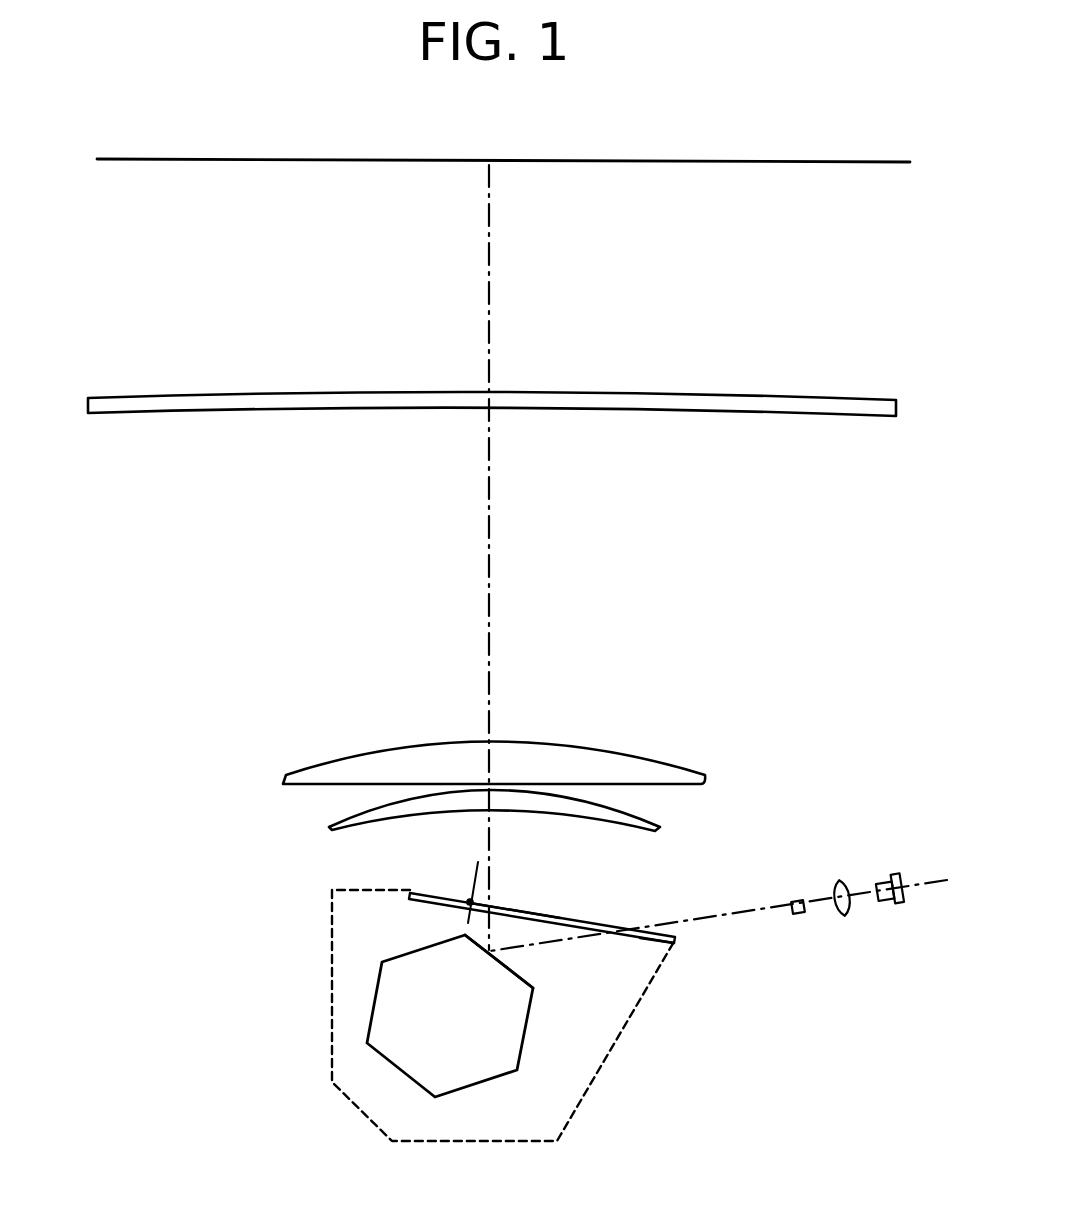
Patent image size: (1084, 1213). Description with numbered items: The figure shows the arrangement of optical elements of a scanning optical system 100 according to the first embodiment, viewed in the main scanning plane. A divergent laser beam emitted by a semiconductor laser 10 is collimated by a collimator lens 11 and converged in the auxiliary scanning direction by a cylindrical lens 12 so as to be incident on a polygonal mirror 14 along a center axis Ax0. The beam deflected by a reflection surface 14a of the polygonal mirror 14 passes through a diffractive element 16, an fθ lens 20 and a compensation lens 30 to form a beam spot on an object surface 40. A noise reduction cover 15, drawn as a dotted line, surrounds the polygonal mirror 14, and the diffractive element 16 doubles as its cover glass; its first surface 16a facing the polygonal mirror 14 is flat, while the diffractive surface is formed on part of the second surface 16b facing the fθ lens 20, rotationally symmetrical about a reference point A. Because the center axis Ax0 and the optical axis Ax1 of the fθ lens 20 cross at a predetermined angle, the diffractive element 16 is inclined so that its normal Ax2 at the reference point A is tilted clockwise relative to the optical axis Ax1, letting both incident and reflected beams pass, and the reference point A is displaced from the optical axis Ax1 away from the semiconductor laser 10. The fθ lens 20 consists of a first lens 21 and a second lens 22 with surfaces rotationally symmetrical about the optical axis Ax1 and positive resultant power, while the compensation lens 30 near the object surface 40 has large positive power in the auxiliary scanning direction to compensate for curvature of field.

The scanning optical system 100 is at (268, 612).
The object surface 40 is at (837, 164).
The compensation lens 30 is at (845, 406).
The fθ lens 20 is at (217, 748).
The second lens 22 is at (285, 775).
The first lens 21 is at (327, 828).
The diffractive element 16 is at (609, 915).
The second surface 16b is at (556, 913).
The first surface 16a is at (647, 942).
The noise reduction cover 15 is at (331, 1008).
The polygonal mirror 14 is at (382, 1043).
The reflection surface 14a is at (513, 972).
The cylindrical lens 12 is at (795, 913).
The collimator lens 11 is at (842, 916).
The semiconductor laser 10 is at (886, 904).
The center axis of the incident laser beam Ax0 is at (748, 910).
The optical axis of the fθ lens Ax1 is at (489, 657).
The normal of the diffractive element Ax2 is at (466, 873).
The reference point A is at (466, 900).